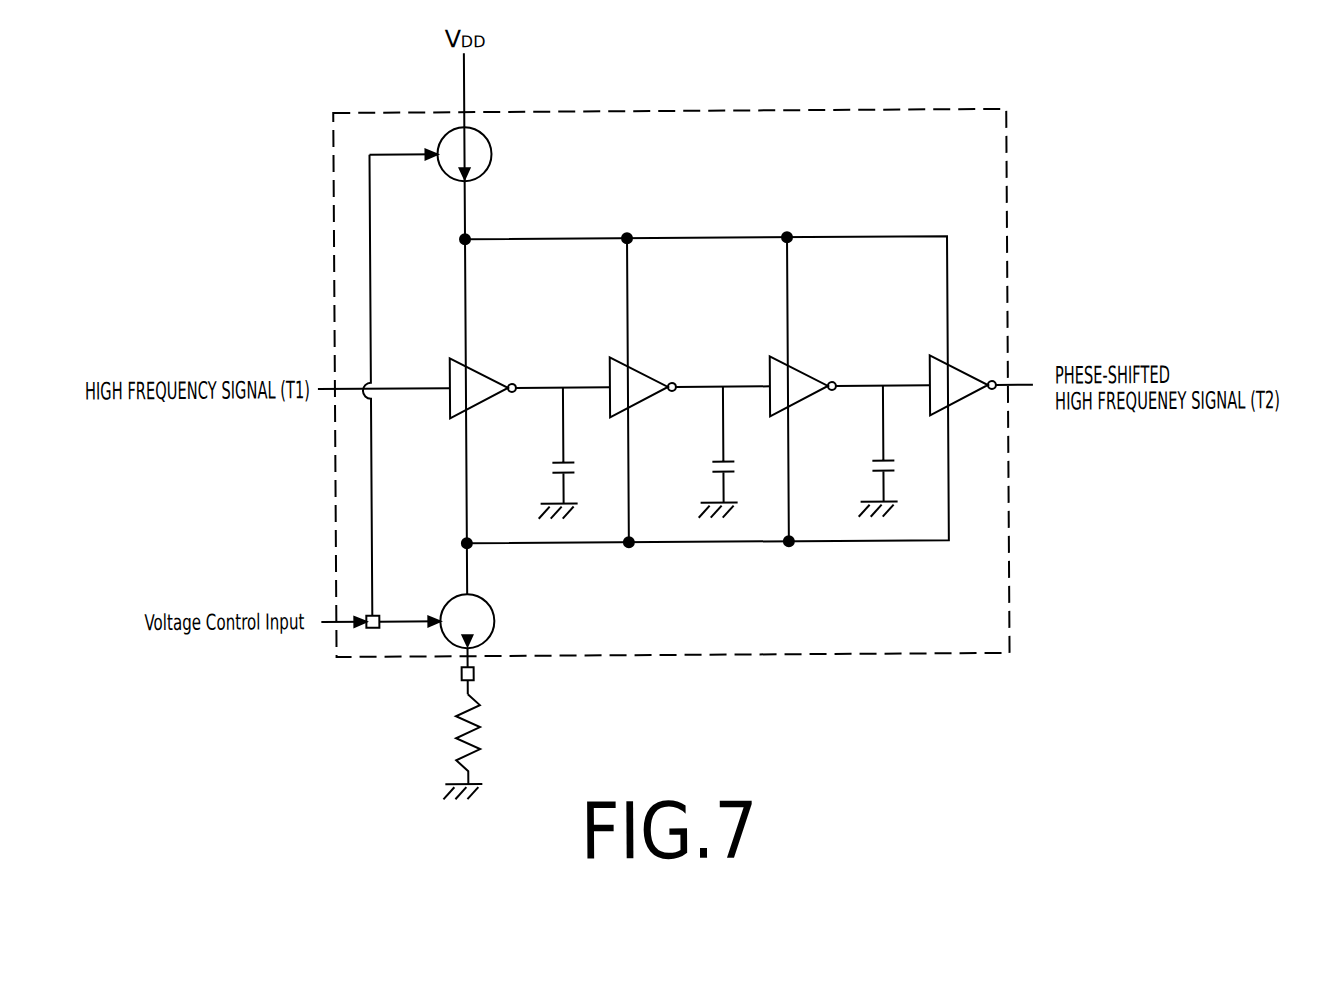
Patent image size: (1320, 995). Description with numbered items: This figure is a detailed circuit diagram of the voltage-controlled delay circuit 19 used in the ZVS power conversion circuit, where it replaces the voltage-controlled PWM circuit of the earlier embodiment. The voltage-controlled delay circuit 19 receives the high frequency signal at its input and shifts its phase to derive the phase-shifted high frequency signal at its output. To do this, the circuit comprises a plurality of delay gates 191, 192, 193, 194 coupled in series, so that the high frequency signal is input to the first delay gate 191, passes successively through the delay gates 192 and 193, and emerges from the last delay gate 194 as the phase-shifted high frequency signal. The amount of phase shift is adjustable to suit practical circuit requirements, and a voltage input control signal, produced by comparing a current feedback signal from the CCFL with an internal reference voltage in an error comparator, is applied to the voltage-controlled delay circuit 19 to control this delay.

The voltage-controlled delay circuit 19 is at (683, 109).
The delay gate 191 is at (497, 380).
The delay gate 192 is at (657, 380).
The delay gate 193 is at (817, 380).
The delay gate 194 is at (977, 380).